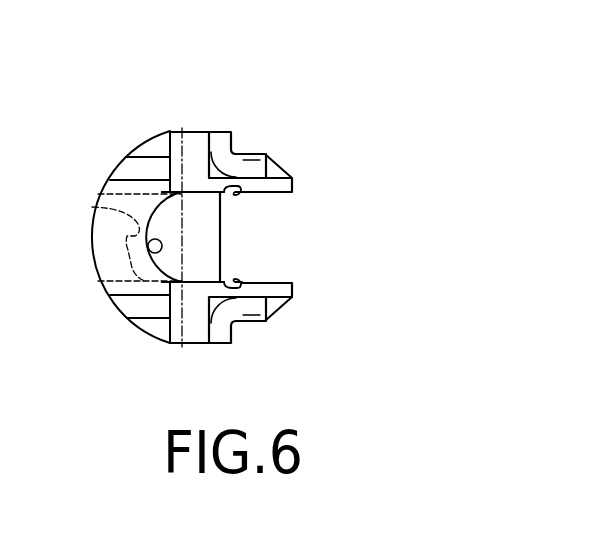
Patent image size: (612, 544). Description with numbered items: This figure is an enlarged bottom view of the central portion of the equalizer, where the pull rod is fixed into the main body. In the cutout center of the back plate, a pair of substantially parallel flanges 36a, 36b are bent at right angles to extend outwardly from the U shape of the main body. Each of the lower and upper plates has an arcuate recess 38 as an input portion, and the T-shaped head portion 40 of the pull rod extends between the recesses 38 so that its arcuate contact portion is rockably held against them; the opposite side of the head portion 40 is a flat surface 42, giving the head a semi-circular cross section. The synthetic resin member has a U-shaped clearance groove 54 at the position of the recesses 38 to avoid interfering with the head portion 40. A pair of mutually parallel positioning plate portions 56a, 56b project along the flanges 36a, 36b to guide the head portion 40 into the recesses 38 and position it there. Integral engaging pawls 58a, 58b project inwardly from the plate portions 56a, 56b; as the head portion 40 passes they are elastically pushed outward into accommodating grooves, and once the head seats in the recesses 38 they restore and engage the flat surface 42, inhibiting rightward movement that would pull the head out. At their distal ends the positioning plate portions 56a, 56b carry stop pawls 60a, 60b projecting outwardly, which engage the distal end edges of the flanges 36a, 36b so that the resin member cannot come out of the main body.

The flange 36a is at (259, 163).
The flange 36b is at (258, 313).
The recess 38 is at (150, 251).
The head portion 40 is at (172, 215).
The flat surface 42 is at (221, 238).
The clearance groove 54 is at (92, 207).
The positioning plate portion 56a is at (248, 188).
The positioning plate portion 56b is at (248, 287).
The engaging pawl 58a is at (242, 196).
The engaging pawl 58b is at (243, 276).
The stop pawl 60a is at (275, 170).
The stop pawl 60b is at (273, 305).